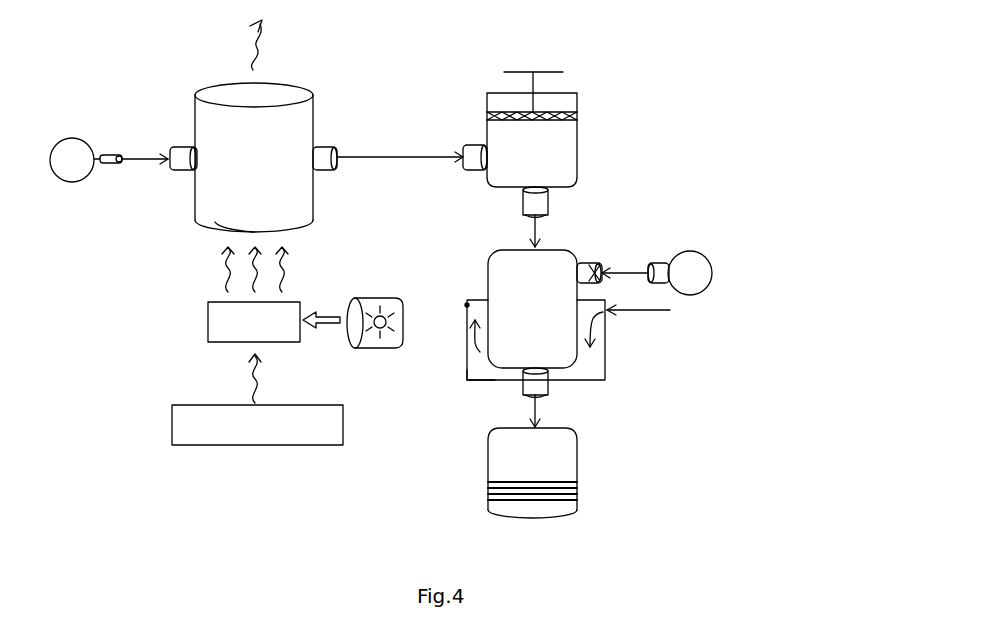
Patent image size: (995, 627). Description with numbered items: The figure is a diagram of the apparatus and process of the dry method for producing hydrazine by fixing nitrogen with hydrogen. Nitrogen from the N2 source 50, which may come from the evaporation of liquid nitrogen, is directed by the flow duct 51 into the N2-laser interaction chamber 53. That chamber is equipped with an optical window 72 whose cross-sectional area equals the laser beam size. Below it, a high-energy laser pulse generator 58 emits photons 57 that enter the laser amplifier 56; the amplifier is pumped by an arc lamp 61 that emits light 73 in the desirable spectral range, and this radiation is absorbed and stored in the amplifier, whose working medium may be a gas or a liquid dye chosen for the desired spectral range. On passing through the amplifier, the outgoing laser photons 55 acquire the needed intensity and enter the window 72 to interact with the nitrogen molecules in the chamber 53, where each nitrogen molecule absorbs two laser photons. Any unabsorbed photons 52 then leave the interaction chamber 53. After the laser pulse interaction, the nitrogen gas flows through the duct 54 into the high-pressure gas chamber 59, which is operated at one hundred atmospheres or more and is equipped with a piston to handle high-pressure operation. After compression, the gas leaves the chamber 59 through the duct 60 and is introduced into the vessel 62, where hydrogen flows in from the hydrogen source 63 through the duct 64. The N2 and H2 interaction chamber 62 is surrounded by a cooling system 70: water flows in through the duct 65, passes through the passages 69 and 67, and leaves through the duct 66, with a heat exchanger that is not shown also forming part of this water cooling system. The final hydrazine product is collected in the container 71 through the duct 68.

The N2 source 50 is at (66, 182).
The flow duct 51 is at (160, 156).
The unabsorbed photons 52 is at (271, 37).
The N2-laser interaction chamber 53 is at (315, 108).
The duct 54 is at (388, 157).
The outgoing laser photons 55 is at (293, 257).
The laser amplifier 56 is at (207, 316).
The photons 57 is at (268, 381).
The high-energy laser pulse generator 58 is at (172, 421).
The high-pressure gas chamber 59 is at (577, 152).
The duct 60 is at (545, 230).
The arc lamp 61 is at (365, 349).
The N2 and H2 interaction chamber 62 is at (498, 254).
The hydrogen source 63 is at (700, 252).
The duct 64 is at (612, 262).
The duct 65 is at (640, 311).
The duct 66 is at (467, 306).
The cooling passage 67 is at (467, 350).
The duct 68 is at (542, 412).
The cooling passage 69 is at (605, 322).
The cooling system 70 is at (480, 382).
The container 71 is at (488, 466).
The optical window 72 is at (228, 218).
The light 73 is at (316, 318).